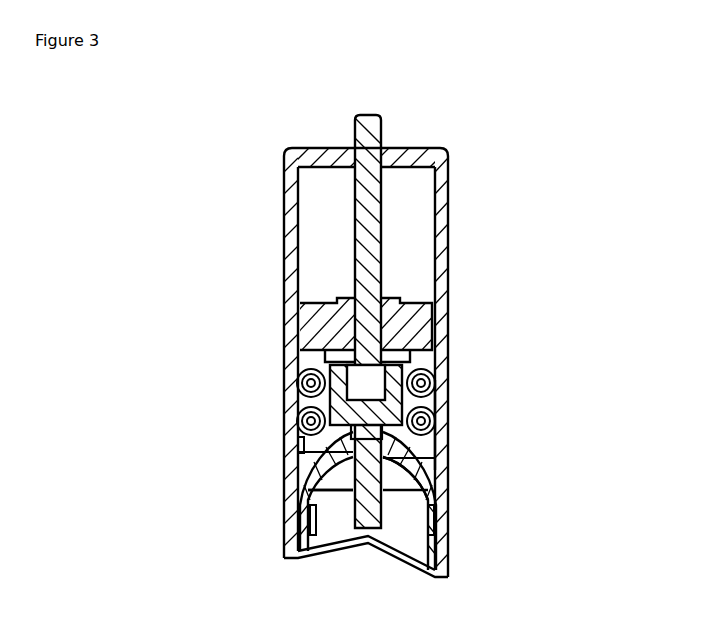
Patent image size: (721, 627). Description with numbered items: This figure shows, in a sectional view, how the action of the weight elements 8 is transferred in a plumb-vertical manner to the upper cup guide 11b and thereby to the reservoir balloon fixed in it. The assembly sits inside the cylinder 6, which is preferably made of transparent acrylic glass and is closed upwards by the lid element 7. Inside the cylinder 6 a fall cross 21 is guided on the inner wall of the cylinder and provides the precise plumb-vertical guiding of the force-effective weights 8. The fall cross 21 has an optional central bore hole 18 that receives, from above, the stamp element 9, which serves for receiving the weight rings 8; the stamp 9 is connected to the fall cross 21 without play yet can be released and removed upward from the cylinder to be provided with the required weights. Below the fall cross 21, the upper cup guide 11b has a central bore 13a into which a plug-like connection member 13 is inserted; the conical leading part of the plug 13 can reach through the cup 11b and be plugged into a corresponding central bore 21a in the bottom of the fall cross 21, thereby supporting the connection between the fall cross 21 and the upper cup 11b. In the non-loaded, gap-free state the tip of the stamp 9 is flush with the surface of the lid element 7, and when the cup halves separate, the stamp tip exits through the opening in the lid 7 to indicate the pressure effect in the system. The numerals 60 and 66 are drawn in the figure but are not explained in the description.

The lid element 7 is at (322, 145).
The housing 60 is at (283, 270).
The stamp element 9 is at (367, 290).
The weight elements 8 is at (410, 322).
The central bore hole 18 is at (370, 386).
The fall cross 21 is at (297, 390).
The central bore 21a is at (445, 458).
The cylinder 6 is at (445, 435).
The groove in housing wall 66 is at (287, 452).
The plug-like connection member 13 is at (362, 482).
The central bore 13a is at (365, 481).
The upper cup guide 11b is at (400, 477).